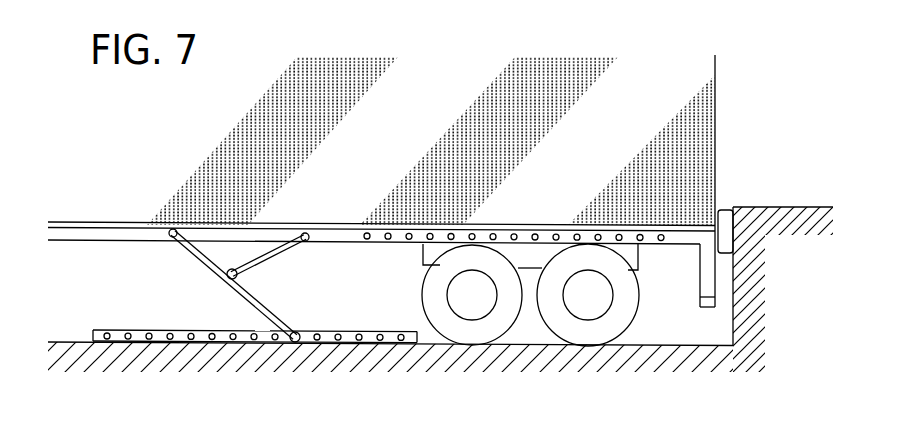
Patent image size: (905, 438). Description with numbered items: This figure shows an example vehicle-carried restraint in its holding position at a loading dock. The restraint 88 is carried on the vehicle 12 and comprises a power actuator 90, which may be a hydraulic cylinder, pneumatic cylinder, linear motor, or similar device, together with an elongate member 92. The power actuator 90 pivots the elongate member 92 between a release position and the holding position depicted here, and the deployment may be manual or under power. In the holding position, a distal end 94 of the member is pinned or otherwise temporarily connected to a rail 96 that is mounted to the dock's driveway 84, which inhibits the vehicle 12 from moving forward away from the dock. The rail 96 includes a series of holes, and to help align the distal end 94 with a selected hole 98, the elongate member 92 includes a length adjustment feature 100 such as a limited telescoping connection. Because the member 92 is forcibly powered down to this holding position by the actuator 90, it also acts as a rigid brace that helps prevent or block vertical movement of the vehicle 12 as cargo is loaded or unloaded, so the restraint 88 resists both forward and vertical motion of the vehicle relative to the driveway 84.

The vehicle 12 is at (715, 136).
The driveway 84 is at (667, 343).
The restraint 88 is at (217, 285).
The power actuator 90 is at (282, 249).
The elongate member 92 is at (237, 294).
The distal end 94 is at (297, 326).
The rail 96 is at (158, 328).
The hole 98 is at (317, 330).
The length adjustment feature 100 is at (276, 326).